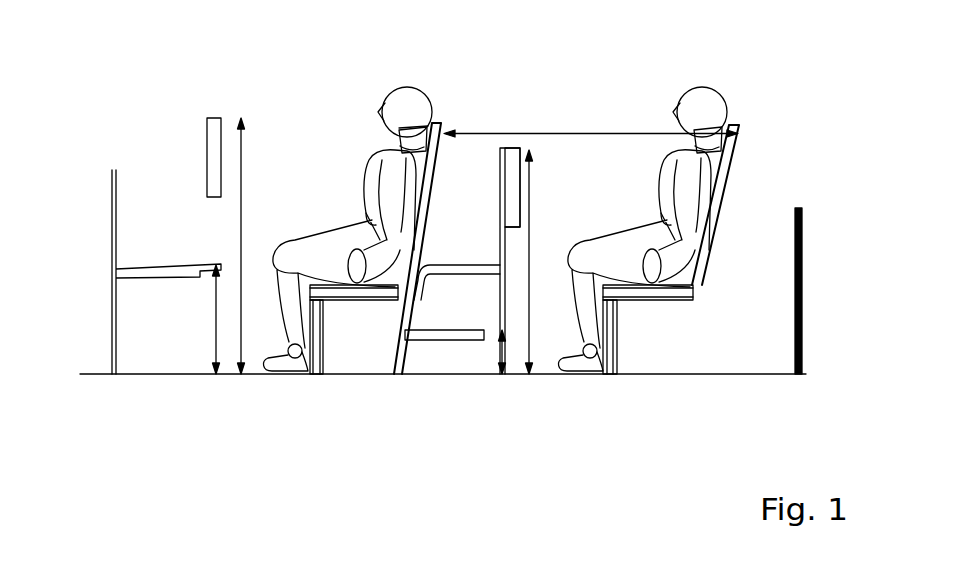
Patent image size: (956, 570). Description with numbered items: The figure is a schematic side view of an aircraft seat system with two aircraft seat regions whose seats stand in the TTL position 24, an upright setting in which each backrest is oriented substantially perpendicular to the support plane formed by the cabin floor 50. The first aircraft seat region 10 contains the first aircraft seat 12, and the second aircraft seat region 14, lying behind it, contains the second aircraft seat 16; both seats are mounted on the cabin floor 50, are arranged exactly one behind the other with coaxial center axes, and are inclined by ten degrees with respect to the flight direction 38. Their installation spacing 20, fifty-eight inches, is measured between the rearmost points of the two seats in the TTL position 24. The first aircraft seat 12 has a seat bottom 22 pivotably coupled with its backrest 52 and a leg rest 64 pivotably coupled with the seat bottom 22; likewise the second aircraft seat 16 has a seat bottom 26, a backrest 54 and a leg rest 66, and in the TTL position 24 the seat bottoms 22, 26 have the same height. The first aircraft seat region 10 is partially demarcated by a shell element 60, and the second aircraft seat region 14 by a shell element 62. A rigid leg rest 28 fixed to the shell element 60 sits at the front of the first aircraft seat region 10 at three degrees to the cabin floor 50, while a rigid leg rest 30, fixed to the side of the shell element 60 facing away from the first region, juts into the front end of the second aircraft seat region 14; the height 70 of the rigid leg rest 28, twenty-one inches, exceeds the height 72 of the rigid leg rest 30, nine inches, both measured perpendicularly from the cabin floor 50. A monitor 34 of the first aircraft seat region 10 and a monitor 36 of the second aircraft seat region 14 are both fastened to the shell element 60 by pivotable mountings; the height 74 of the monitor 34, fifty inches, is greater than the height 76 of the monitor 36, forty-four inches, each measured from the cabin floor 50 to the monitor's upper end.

The first aircraft seat region 10 is at (312, 125).
The first aircraft seat 12 is at (548, 246).
The second aircraft seat region 14 is at (648, 241).
The second aircraft seat 16 is at (645, 345).
The installation spacing 20 is at (587, 133).
The seat bottom 22 is at (343, 300).
The TTL position 24 is at (446, 129).
The seat bottom 26 is at (681, 300).
The rigid leg rest 28 is at (114, 272).
The rigid leg rest 30 is at (440, 342).
The monitor 34 is at (207, 140).
The monitor 36 is at (518, 148).
The flight direction 38 is at (562, 186).
The cabin floor 50 is at (740, 366).
The backrest 52 is at (442, 117).
The backrest 54 is at (736, 158).
The shell element 60 is at (501, 147).
The shell element 62 is at (797, 208).
The leg rest 64 is at (317, 376).
The leg rest 66 is at (612, 376).
The height 70 is at (215, 378).
The height 72 is at (502, 378).
The height 74 is at (245, 140).
The height 76 is at (530, 378).